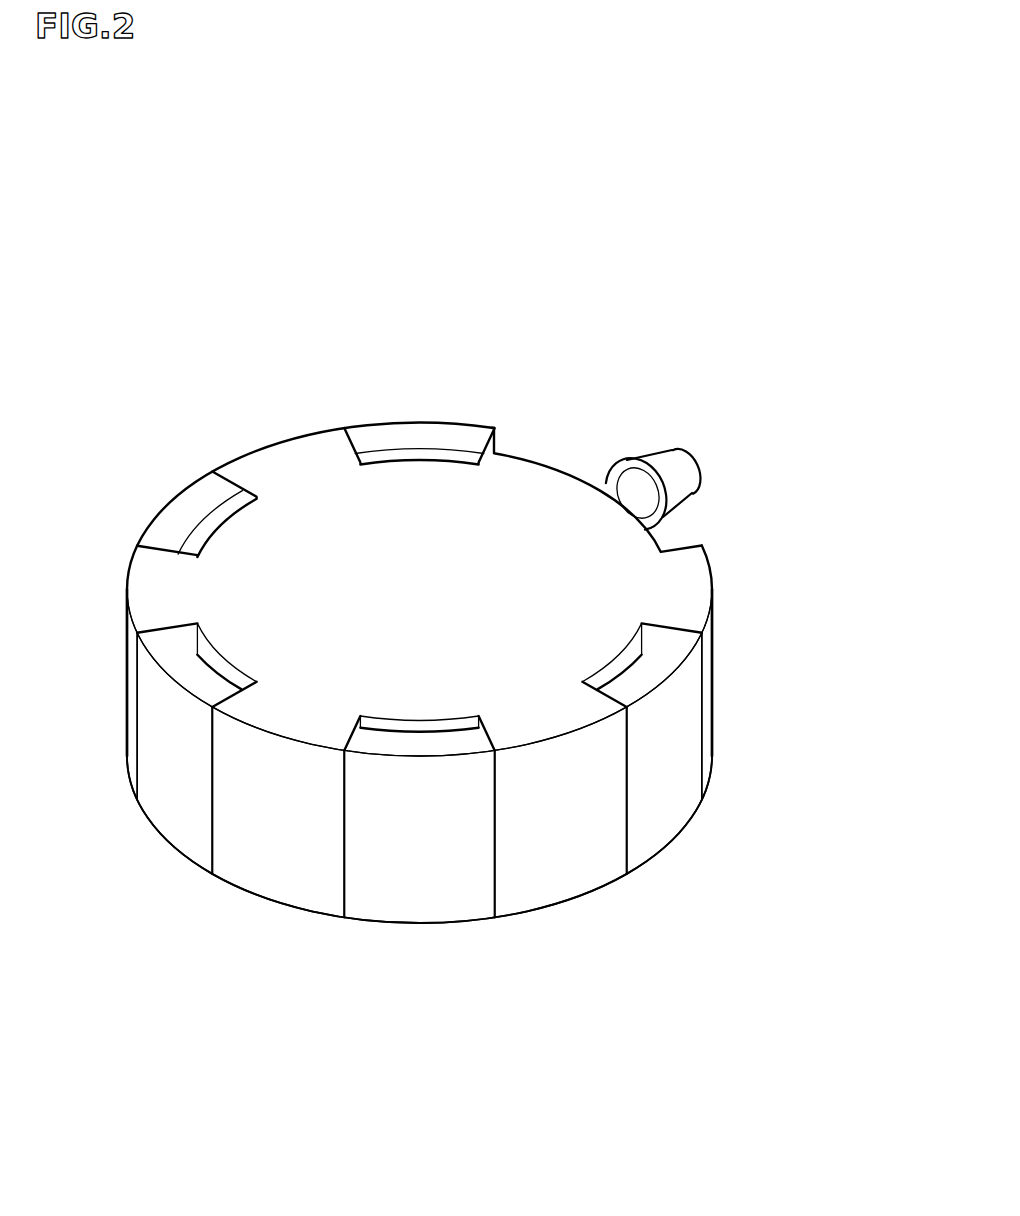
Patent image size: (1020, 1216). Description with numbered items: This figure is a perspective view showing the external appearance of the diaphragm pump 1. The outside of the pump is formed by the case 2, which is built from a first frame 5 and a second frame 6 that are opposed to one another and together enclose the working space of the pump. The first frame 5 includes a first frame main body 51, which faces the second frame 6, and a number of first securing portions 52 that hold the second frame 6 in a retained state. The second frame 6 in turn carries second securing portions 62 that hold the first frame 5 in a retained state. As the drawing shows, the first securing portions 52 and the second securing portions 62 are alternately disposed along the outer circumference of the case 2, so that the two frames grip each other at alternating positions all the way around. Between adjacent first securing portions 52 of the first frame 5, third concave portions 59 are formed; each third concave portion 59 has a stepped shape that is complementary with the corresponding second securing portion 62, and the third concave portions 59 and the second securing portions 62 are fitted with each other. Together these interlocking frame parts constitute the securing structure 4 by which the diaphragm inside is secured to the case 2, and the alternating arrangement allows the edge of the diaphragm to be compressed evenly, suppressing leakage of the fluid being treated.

The diaphragm pump 1 is at (702, 280).
The case 2 is at (423, 320).
The securing structure 4 is at (710, 806).
The first frame 5 is at (530, 491).
The first frame main body 51 is at (553, 598).
The first securing portions 52 is at (268, 855).
The third concave portions 59 is at (429, 717).
The second frame 6 is at (418, 432).
The second securing portions 62 is at (172, 806).